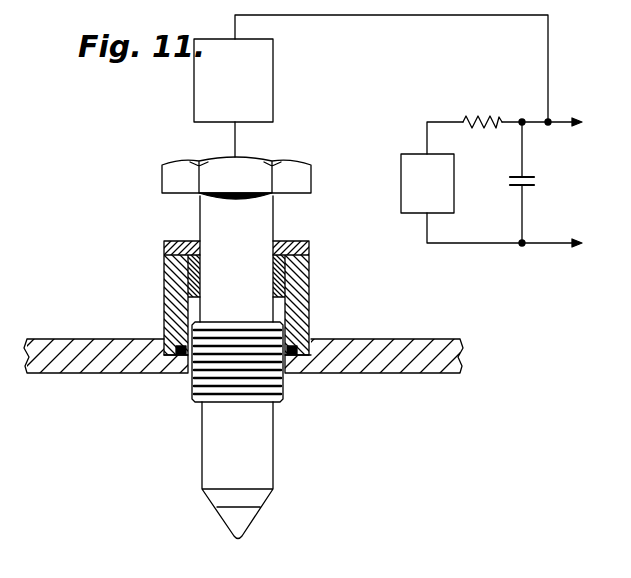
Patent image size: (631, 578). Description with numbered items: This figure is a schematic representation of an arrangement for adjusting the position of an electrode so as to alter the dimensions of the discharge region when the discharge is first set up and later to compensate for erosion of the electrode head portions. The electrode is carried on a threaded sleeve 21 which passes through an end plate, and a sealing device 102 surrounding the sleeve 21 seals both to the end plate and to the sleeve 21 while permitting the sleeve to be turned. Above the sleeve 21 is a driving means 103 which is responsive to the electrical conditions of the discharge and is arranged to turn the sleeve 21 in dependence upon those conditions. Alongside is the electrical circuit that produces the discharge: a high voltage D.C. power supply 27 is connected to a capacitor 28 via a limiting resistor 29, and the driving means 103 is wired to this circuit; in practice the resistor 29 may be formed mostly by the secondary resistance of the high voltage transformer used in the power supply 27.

The sleeve 21 is at (250, 238).
The high voltage D.C. power supply 27 is at (445, 192).
The capacitor 28 is at (535, 181).
The limiting resistor 29 is at (478, 118).
The sealing device 102 is at (173, 303).
The driving means 103 is at (258, 99).